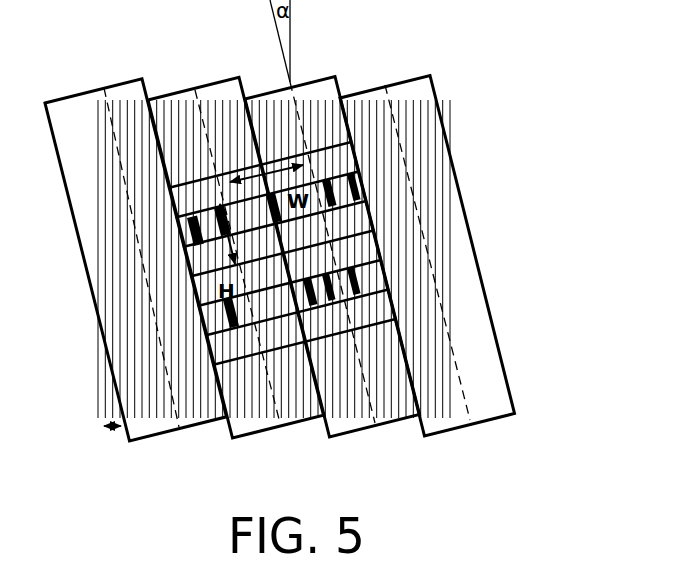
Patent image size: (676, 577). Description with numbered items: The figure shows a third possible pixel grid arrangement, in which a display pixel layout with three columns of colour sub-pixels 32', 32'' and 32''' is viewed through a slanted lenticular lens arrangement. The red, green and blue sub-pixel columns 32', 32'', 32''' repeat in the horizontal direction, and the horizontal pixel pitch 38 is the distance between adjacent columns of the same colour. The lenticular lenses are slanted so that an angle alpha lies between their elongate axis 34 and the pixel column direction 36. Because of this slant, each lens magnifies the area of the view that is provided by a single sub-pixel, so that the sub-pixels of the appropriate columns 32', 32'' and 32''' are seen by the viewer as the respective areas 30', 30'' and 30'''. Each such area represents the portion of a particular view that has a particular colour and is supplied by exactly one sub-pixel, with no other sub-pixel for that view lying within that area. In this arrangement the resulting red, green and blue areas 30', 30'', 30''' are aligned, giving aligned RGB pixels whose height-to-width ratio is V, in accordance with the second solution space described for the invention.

The red sub-pixel area 30' is at (352, 196).
The green sub-pixel area 30'' is at (363, 227).
The blue sub-pixel area 30''' is at (373, 273).
The red sub-pixel column 32' is at (113, 244).
The green sub-pixel column 32'' is at (282, 231).
The blue sub-pixel column 32''' is at (274, 232).
The elongate axis 34 is at (281, 50).
The pixel column direction 36 is at (291, 28).
The horizontal pixel pitch 38 is at (110, 430).